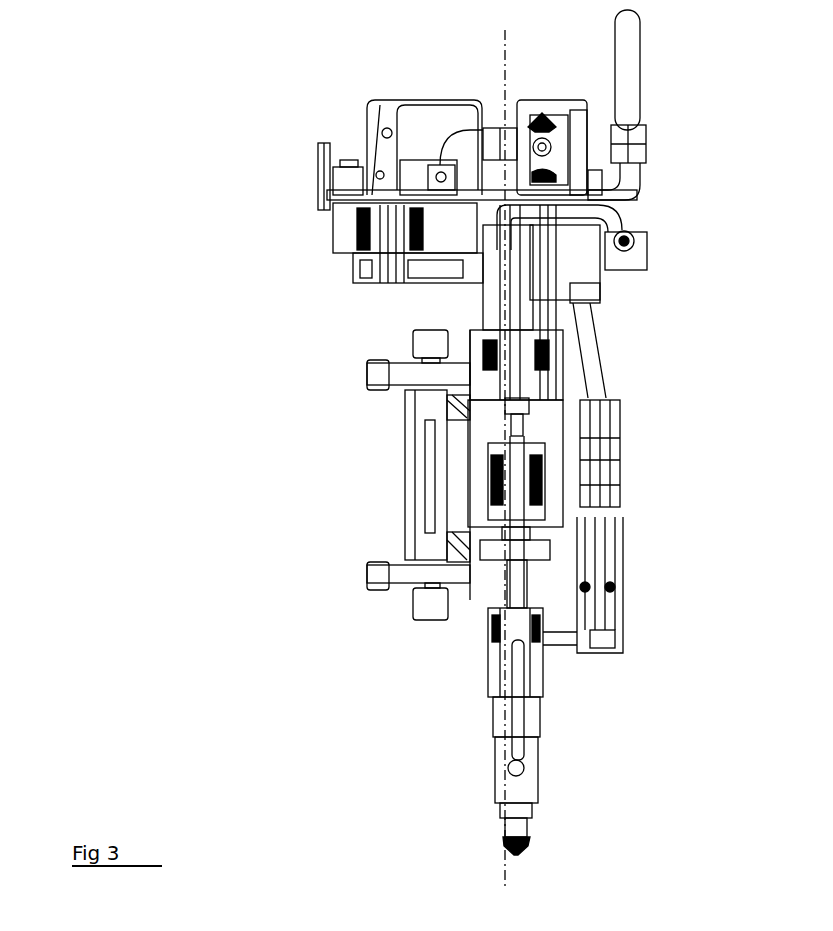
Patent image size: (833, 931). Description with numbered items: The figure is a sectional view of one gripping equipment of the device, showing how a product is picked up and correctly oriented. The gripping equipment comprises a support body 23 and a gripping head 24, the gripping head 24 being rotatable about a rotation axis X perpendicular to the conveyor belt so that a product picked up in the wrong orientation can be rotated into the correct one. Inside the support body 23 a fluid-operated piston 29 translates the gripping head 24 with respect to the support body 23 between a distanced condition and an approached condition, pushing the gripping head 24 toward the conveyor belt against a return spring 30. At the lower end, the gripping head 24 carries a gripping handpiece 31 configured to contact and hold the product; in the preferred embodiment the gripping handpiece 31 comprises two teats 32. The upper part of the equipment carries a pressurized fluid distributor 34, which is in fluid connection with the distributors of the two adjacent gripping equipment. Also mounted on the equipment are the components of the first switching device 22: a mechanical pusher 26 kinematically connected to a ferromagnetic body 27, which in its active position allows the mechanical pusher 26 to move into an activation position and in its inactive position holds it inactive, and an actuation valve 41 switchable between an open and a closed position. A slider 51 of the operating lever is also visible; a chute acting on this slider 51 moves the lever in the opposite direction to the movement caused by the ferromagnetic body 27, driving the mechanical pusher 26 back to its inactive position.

The rotation axis X is at (500, 53).
The first switching device 22 is at (487, 623).
The support body 23 is at (483, 285).
The gripping head 24 is at (493, 705).
The mechanical pusher 26 is at (422, 172).
The ferromagnetic body 27 is at (318, 175).
The fluid-operated piston 29 is at (553, 430).
The return spring 30 is at (532, 472).
The gripping handpiece 31 is at (528, 822).
The teats 32 is at (505, 838).
The pressurized fluid distributor 34 is at (563, 133).
The actuation valve 41 is at (575, 250).
The slider 51 is at (349, 160).